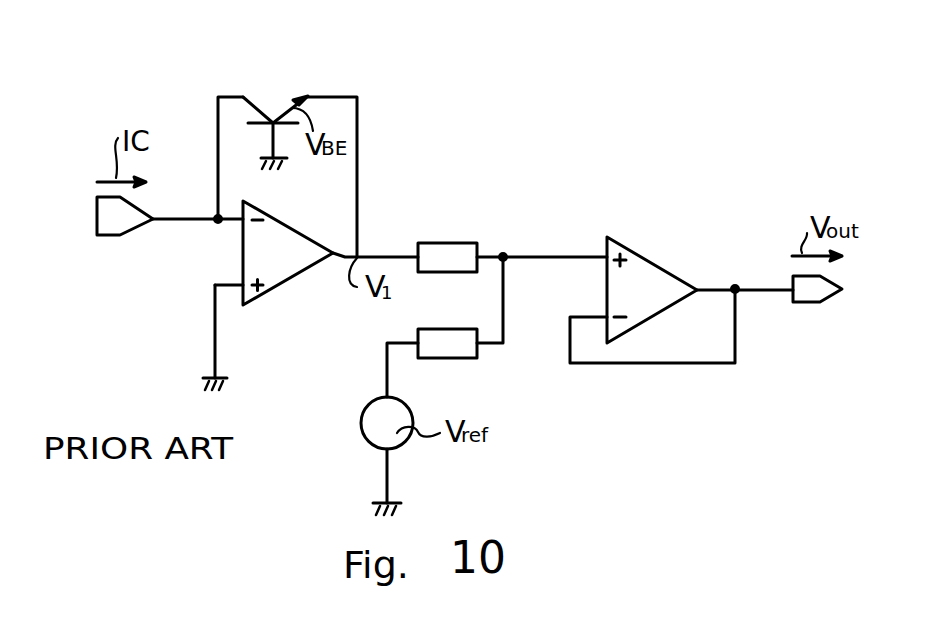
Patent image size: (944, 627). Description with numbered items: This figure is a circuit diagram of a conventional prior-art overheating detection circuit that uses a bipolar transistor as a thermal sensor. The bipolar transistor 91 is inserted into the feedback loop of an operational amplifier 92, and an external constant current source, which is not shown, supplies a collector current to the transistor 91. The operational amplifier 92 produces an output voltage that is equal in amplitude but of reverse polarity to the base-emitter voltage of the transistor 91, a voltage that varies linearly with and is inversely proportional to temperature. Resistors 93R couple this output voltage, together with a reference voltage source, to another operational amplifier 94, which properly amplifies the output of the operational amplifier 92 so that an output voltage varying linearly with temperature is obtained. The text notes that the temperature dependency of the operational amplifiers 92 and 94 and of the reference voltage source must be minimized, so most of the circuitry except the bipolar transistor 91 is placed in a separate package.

The bipolar transistor 91 is at (273, 123).
The operational amplifier 92 is at (277, 266).
The resistors (equal value) 93R is at (448, 258).
The operational amplifier 94 is at (638, 281).